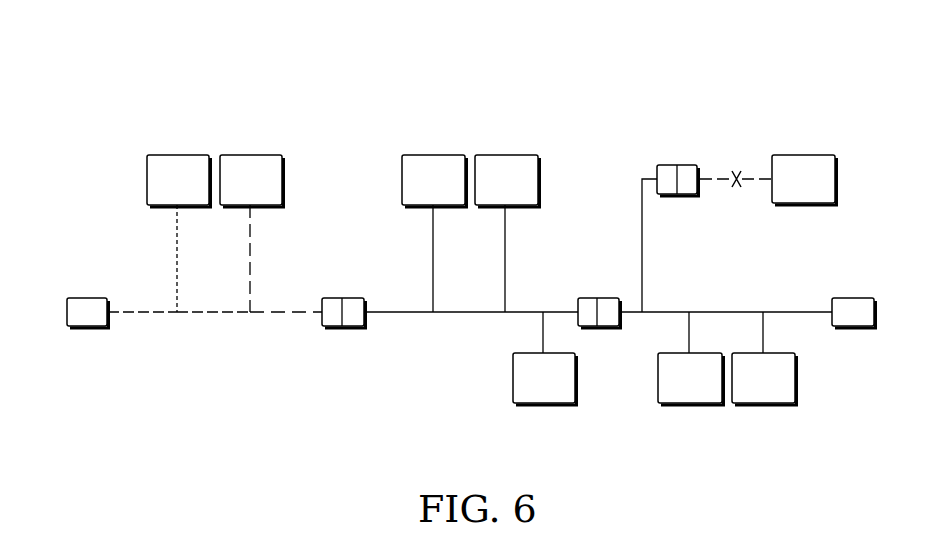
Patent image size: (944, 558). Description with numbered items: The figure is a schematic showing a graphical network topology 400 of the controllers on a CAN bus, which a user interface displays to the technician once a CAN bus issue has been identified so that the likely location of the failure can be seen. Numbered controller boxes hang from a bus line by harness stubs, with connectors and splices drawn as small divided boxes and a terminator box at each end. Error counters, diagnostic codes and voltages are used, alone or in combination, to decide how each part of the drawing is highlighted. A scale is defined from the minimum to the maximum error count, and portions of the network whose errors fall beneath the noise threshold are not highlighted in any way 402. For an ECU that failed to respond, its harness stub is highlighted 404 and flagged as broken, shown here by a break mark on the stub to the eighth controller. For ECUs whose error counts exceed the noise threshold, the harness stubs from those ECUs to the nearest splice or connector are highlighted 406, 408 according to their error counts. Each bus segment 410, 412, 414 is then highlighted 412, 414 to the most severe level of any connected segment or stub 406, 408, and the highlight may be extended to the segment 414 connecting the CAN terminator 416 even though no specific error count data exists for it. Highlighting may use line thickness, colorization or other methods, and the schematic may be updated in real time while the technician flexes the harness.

The graphical network topology 400 is at (126, 50).
The non-highlighted network portion 402 is at (395, 313).
The highlighted harness stub of non-responding ECU 404 is at (736, 168).
The highlighted harness stub 406 is at (177, 256).
The highlighted harness stub 408 is at (251, 259).
The network segment 410 is at (287, 313).
The network segment 412 is at (203, 313).
The network segment 414 is at (138, 313).
The CAN terminator 416 is at (83, 328).